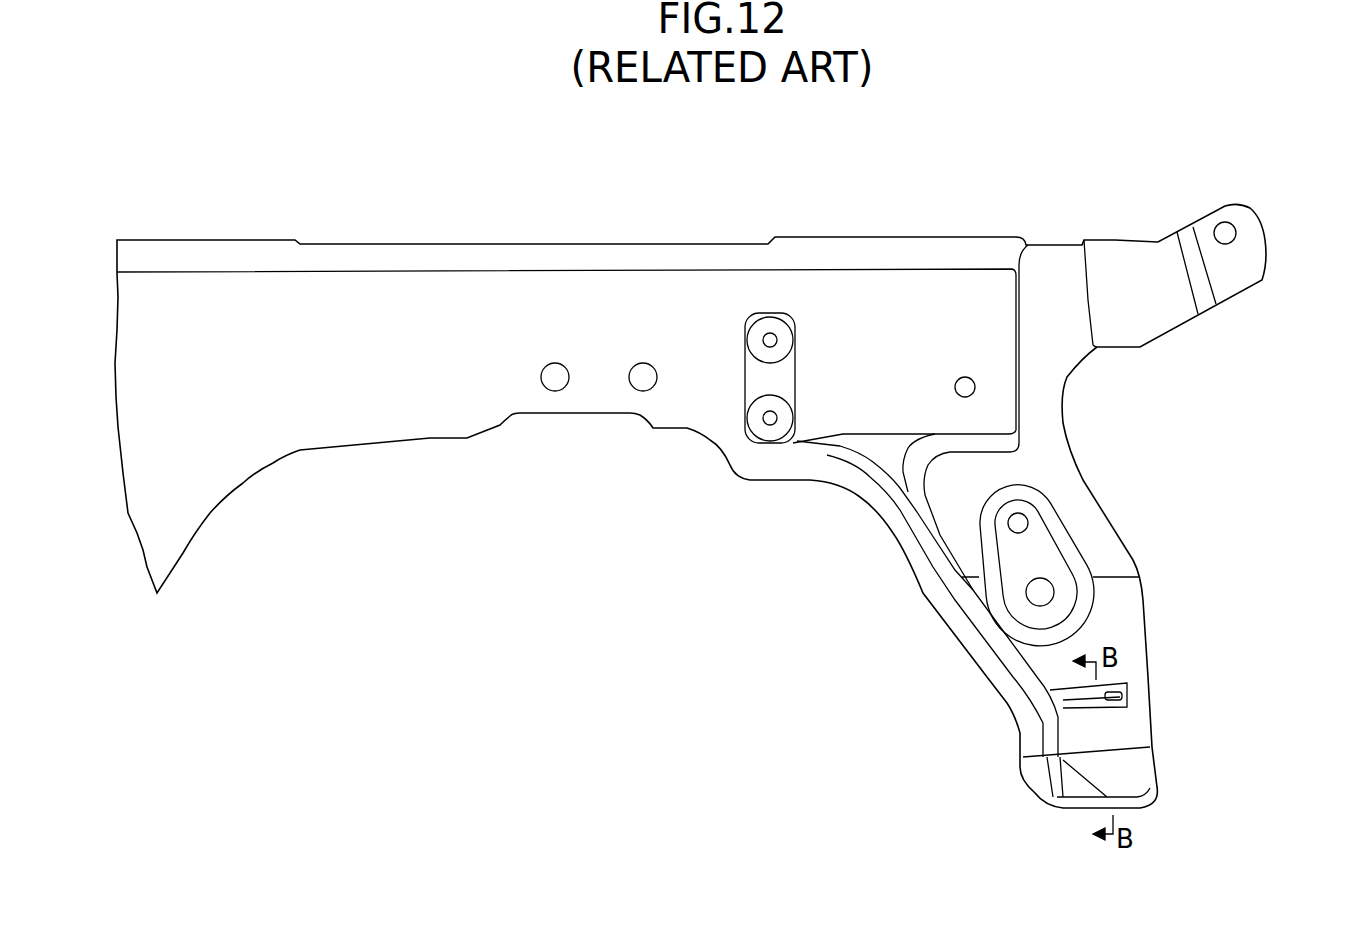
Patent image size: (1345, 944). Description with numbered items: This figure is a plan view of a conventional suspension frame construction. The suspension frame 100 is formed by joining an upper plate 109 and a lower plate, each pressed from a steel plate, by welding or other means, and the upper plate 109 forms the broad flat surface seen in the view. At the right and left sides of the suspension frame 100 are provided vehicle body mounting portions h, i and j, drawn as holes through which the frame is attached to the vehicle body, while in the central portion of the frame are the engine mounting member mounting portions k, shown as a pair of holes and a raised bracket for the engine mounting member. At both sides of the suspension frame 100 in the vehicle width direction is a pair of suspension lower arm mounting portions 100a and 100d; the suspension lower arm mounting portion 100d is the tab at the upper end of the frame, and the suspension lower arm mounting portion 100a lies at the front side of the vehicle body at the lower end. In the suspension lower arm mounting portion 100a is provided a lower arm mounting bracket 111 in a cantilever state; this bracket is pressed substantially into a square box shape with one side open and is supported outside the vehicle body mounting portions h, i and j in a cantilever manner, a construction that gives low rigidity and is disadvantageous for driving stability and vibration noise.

The suspension frame 100 is at (390, 403).
The upper plate 109 is at (495, 293).
The suspension lower arm mounting portion 100d is at (1243, 290).
The suspension lower arm mounting portion 100a is at (1163, 792).
The lower arm mounting bracket 111 is at (1040, 797).
The engine mounting member mounting portions k is at (558, 380).
The vehicle body mounting portion i is at (975, 388).
The vehicle body mounting portion j is at (1220, 229).
The vehicle body mounting portion h is at (1028, 523).